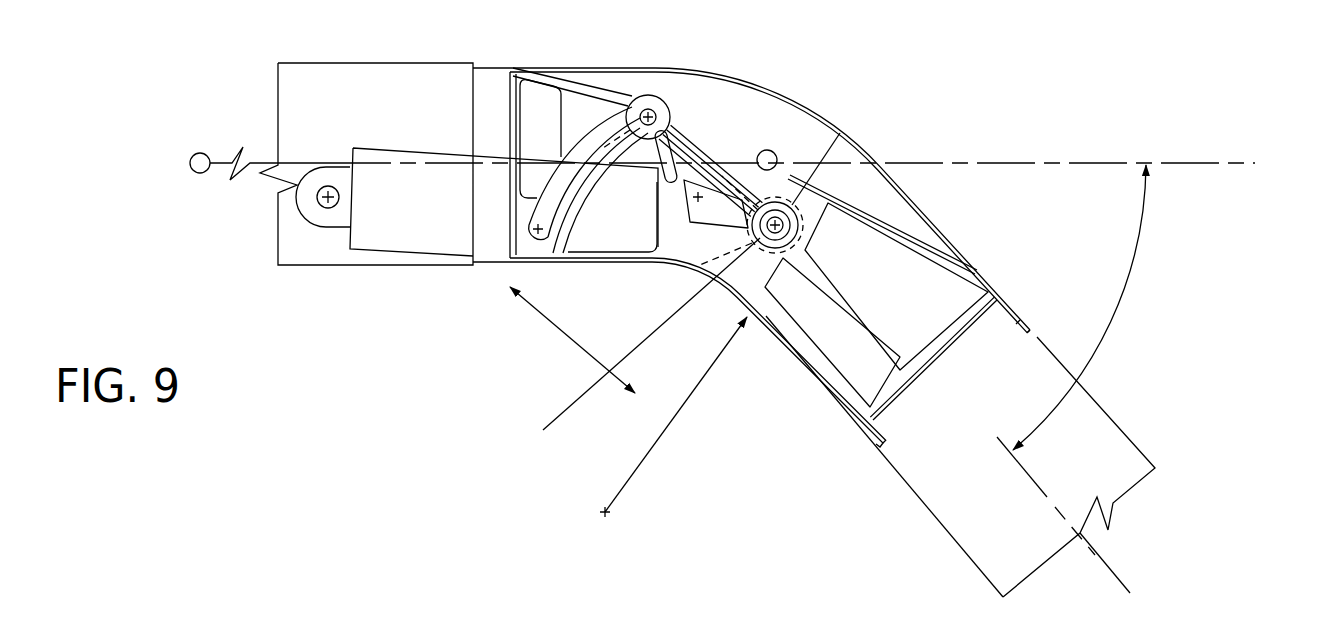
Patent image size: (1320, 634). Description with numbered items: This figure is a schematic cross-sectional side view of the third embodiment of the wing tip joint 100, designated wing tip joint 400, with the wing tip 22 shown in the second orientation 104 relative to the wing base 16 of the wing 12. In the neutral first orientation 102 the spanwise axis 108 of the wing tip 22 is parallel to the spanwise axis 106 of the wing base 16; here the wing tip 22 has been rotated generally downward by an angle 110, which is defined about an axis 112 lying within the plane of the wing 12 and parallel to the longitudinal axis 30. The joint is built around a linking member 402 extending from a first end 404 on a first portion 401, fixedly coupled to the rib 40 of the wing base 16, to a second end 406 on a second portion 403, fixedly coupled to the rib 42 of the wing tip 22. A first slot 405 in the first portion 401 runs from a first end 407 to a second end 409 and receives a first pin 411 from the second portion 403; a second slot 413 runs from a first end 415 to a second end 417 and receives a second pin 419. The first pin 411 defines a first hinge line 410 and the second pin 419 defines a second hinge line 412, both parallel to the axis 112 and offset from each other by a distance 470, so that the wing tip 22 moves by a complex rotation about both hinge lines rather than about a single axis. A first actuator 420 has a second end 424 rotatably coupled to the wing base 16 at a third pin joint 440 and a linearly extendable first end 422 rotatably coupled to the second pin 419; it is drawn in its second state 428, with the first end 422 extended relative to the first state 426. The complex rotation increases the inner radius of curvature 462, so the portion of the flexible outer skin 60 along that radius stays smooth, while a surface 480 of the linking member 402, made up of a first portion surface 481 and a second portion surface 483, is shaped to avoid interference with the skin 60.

The wing 12 is at (252, 0).
The wing base 16 is at (378, 62).
The longitudinal axis 30 is at (196, 152).
The spanwise axis of wing base 106 is at (268, 158).
The rib 40 is at (507, 100).
The first end 404 is at (492, 66).
The first hinge line 410 is at (624, 108).
The first pin 411 is at (545, 0).
The first portion 401 is at (618, 80).
The linking member 402 is at (778, 155).
The second portion 403 is at (928, 242).
The first state 426 is at (668, 0).
The second end 409 is at (648, 95).
The second hinge line 412 is at (851, 126).
The second pin 419 is at (726, 0).
The first end 415 is at (667, 106).
The axis 112 is at (772, 150).
The flexible outer skin 60 is at (878, 0).
The second slot 413 is at (687, 140).
The second end 417 is at (840, 133).
The first orientation 102 is at (1210, 0).
The third pin joint 440 is at (320, 202).
The second end 424 is at (302, 234).
The first actuator 420 is at (383, 253).
The first slot 405 is at (526, 232).
The first end 407 is at (530, 240).
The distance 470 is at (554, 327).
The wing tip joint 100 is at (706, 243).
The wing tip joint 400 is at (560, 372).
The inner radius of curvature 462 is at (665, 440).
The surface 480 is at (746, 417).
The first portion surface 481 is at (625, 347).
The second portion surface 483 is at (780, 308).
The first end 422 is at (733, 250).
The second state 428 is at (731, 270).
The second end 406 is at (1003, 280).
The angle 110 is at (1136, 256).
The rib 42 is at (972, 337).
The wing tip 22 is at (1088, 388).
The second orientation 104 is at (1196, 430).
The spanwise axis of wing tip 108 is at (1110, 566).